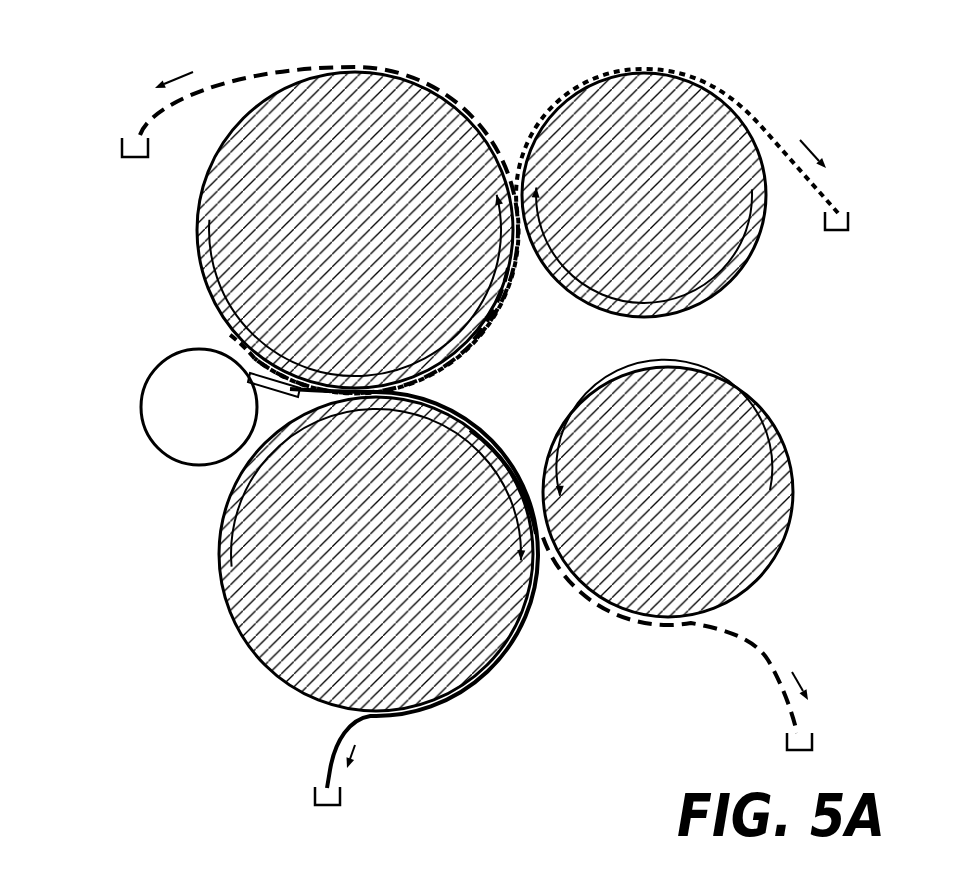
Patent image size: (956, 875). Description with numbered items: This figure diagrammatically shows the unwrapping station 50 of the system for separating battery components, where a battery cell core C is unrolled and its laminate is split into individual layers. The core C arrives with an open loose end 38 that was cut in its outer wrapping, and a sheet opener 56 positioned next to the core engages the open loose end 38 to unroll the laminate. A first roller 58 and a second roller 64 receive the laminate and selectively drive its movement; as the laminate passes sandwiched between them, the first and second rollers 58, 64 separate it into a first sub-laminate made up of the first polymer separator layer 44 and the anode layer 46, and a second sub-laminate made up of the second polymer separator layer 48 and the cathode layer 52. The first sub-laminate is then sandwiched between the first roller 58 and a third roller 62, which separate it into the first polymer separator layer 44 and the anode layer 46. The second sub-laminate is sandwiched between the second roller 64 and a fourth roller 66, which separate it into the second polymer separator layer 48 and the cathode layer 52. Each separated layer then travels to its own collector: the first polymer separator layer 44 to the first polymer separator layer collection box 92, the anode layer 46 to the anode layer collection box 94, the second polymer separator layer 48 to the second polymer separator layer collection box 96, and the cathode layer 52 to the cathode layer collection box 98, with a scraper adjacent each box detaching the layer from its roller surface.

The open loose end 38 is at (228, 343).
The first polymer separator layer 44 is at (268, 66).
The anode layer 46 is at (761, 125).
The second polymer separator layer 48 is at (770, 658).
The cathode layer 52 is at (353, 720).
The unwrapping station 50 is at (76, 231).
The sheet opener 56 is at (292, 390).
The first roller 58 is at (226, 183).
The third roller 62 is at (746, 250).
The second roller 64 is at (262, 635).
The fourth roller 66 is at (762, 517).
The battery cell core C is at (140, 406).
The first polymer separator layer collection box 92 is at (121, 146).
The anode layer collection box 94 is at (850, 222).
The second polymer separator layer collection box 96 is at (814, 741).
The cathode layer collection box 98 is at (313, 794).